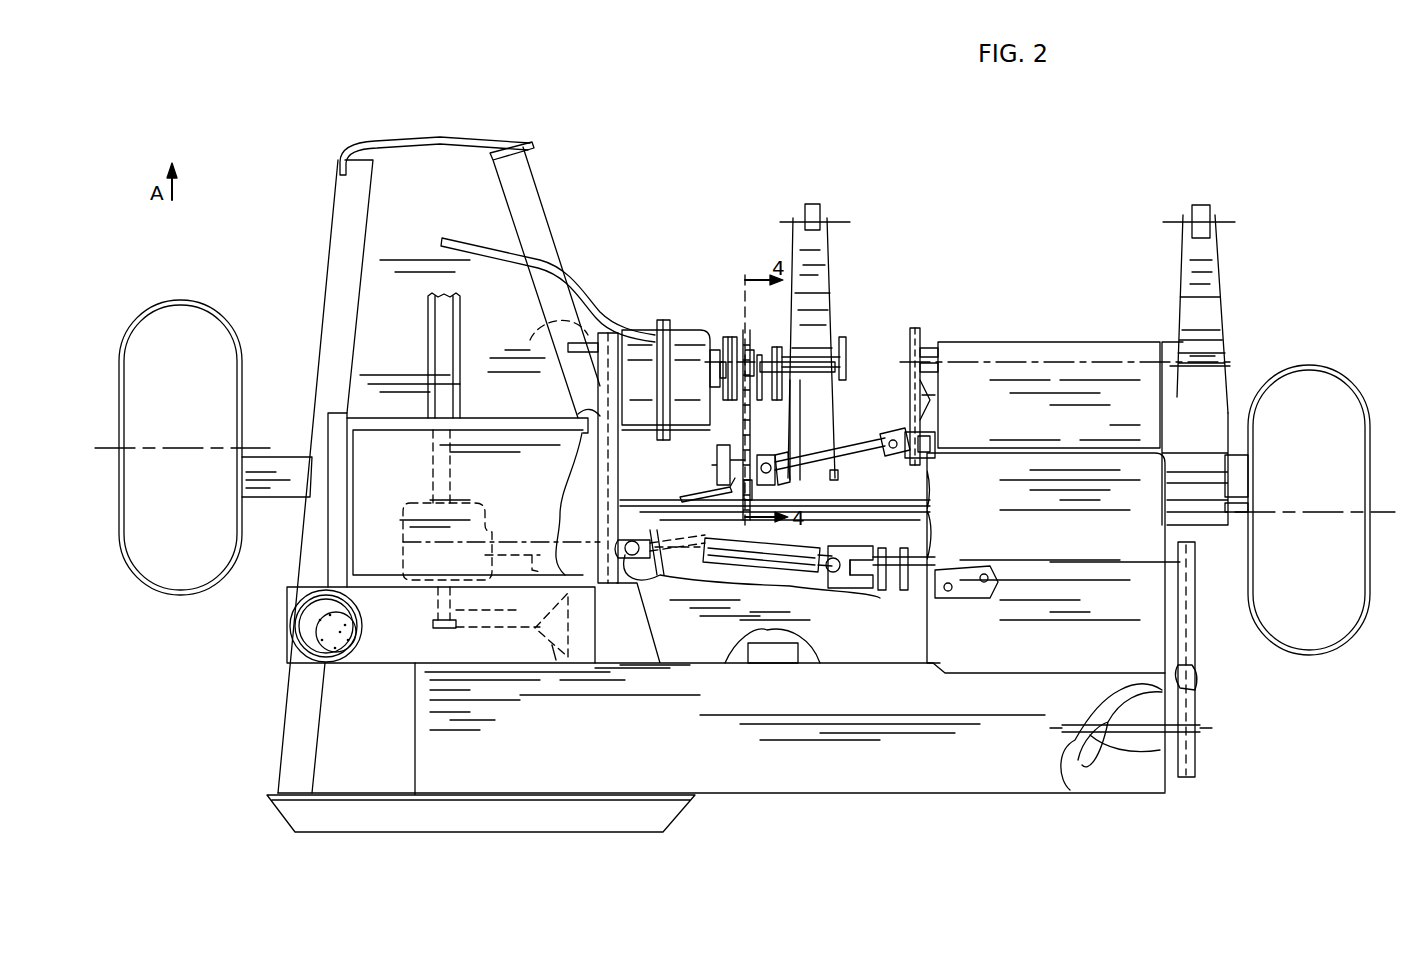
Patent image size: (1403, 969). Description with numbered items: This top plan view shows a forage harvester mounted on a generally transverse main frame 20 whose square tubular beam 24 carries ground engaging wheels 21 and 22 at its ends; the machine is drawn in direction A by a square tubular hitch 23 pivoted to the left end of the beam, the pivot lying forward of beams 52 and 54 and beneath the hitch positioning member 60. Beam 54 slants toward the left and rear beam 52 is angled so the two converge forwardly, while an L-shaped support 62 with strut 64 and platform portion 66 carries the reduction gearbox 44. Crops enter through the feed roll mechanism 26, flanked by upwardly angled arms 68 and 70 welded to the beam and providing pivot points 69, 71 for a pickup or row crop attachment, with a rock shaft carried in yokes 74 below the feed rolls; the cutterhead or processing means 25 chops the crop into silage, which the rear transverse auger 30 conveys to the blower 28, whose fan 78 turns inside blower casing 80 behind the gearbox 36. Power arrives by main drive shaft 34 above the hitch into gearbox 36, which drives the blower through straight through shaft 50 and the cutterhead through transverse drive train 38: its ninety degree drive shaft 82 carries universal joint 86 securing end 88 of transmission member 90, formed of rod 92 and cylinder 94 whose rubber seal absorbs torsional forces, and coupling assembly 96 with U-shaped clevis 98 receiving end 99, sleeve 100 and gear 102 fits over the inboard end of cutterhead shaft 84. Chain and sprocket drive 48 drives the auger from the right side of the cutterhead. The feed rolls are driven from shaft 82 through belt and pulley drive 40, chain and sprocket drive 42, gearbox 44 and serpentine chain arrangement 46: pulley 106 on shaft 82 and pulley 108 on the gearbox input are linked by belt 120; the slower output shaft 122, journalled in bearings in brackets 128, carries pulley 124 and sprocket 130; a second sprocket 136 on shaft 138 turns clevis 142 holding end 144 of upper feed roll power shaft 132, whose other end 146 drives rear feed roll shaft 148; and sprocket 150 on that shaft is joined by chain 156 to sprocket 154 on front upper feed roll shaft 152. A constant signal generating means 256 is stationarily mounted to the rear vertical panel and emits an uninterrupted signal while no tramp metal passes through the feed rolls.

The main frame 20 is at (577, 402).
The ground engaging wheel 21 is at (185, 600).
The ground engaging wheel 22 is at (1345, 628).
The hitch 23 is at (460, 365).
The transverse beam 24 is at (1243, 465).
The cutterhead 25 is at (969, 596).
The feed roll mechanism 26 is at (1040, 340).
The blower 28 is at (378, 675).
The transverse auger 30 is at (1126, 732).
The main drive shaft 34 is at (458, 298).
The gearbox 36 is at (485, 515).
The transverse drive train 38 is at (541, 530).
The belt and pulley drive 40 is at (642, 481).
The chain and sprocket drive 42 is at (888, 315).
The reduction gearbox 44 is at (690, 332).
The serpentine chain arrangement 46 is at (750, 298).
The chain and sprocket drive 48 is at (1196, 680).
The straight through shaft 50 is at (508, 611).
The rear beam 52 is at (295, 712).
The beam 54 is at (540, 228).
The hitch positioning member 60 is at (513, 148).
The L-shaped support 62 is at (656, 294).
The strut 64 is at (615, 302).
The platform portion 66 is at (713, 348).
The arm 68 is at (836, 345).
The pivot point 69 is at (784, 352).
The arm 70 is at (1230, 372).
The pivot point 71 is at (1208, 357).
The yoke 74 is at (1222, 272).
The fan 78 is at (557, 662).
The blower casing 80 is at (441, 625).
The drive shaft 82 is at (542, 568).
The cutterhead shaft 84 is at (930, 592).
The universal joint 86 is at (646, 572).
The end of transmission member 88 is at (660, 545).
The transmission member 90 is at (710, 568).
The rod 92 is at (765, 572).
The cylinder 94 is at (810, 550).
The coupling assembly 96 is at (858, 530).
The clevis 98 is at (860, 580).
The end of transmission member 99 is at (828, 572).
The sleeve 100 is at (872, 590).
The gear 102 is at (890, 548).
The pulley 106 is at (610, 586).
The pulley 108 is at (555, 327).
The belt 120 is at (565, 411).
The output shaft 122 is at (762, 392).
The pulley 124 is at (727, 335).
The brackets 128 is at (795, 372).
The sprocket 130 is at (756, 352).
The upper feed roll power shaft 132 is at (800, 400).
The second sprocket 136 is at (730, 438).
The shaft 138 is at (754, 492).
The clevis 142 is at (765, 458).
The end of power shaft 144 is at (788, 456).
The end of power shaft 146 is at (880, 436).
The rear feed roll shaft 148 is at (930, 468).
The sprocket 150 is at (935, 440).
The shaft 152 is at (927, 350).
The sprocket 154 is at (914, 328).
The chain 156 is at (925, 405).
The constant signal generating means 256 is at (770, 656).